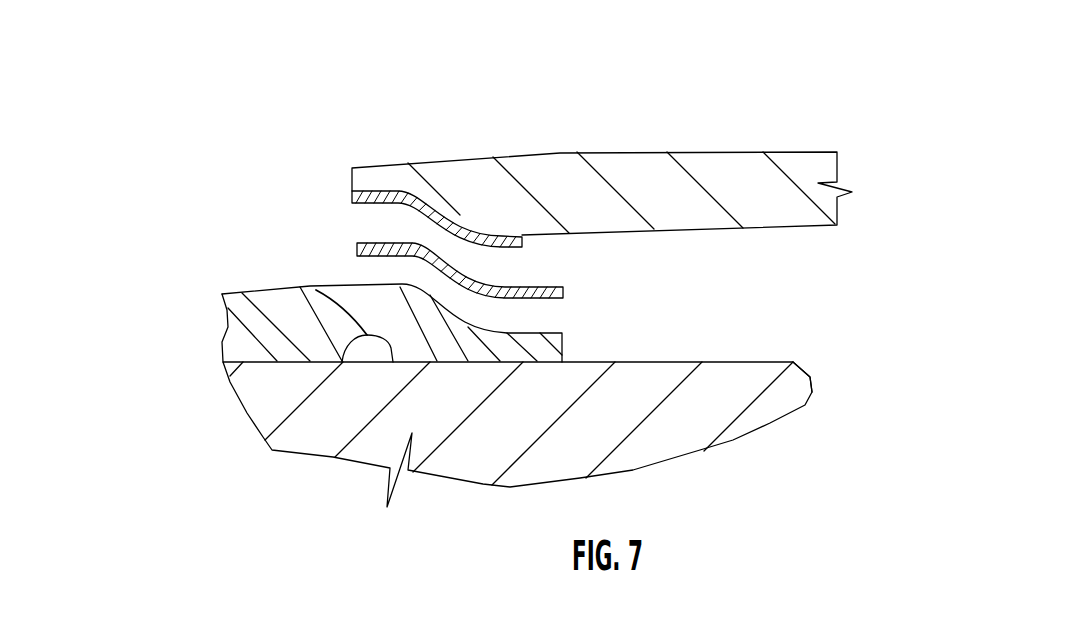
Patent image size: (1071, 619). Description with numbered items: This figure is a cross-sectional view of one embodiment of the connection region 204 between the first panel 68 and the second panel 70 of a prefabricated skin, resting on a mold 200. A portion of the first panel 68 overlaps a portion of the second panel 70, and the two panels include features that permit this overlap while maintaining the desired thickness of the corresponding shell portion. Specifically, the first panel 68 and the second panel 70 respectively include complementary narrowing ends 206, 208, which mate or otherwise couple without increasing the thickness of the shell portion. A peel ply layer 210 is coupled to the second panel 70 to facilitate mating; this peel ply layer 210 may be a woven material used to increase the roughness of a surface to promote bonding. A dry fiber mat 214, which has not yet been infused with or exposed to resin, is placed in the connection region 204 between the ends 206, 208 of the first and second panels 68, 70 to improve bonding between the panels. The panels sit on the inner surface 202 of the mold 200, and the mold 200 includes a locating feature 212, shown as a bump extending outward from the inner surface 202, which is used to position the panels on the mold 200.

The connection region 204 is at (183, 108).
The second panel 70 is at (763, 171).
The narrowing end of the second panel 208 is at (345, 152).
The peel ply layer 210 is at (350, 194).
The dry fiber mat 214 is at (567, 292).
The first panel 68 is at (245, 297).
The locating feature 212 is at (316, 290).
The narrowing end of the first panel 206 is at (582, 350).
The mold 200 is at (772, 402).
The inner surface of the mold 202 is at (793, 362).